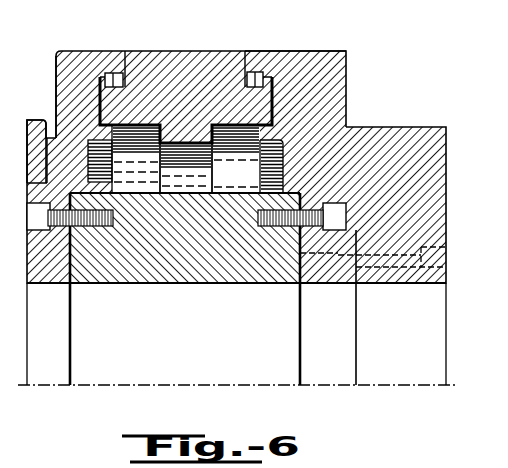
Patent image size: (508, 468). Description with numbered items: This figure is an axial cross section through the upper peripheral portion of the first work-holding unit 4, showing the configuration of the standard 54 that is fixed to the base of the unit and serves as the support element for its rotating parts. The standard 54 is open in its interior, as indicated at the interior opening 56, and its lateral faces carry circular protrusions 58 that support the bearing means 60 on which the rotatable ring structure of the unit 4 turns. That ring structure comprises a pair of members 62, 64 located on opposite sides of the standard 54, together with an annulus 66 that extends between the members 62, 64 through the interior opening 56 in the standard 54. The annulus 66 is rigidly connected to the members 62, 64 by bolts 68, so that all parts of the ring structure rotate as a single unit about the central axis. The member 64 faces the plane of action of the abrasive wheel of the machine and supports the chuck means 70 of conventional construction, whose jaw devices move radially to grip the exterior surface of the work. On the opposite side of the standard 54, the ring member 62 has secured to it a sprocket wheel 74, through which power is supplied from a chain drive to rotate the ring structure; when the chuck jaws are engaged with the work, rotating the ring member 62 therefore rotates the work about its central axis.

The first work-holding unit 4 is at (227, 47).
The standard 54 is at (164, 58).
The interior opening 56 is at (248, 183).
The circular protrusions 58 is at (97, 81).
The bearing means 60 is at (114, 51).
The ring member 62 is at (56, 90).
The ring member 64 is at (350, 111).
The annulus 66 is at (186, 283).
The bolts 68 is at (103, 222).
The chuck means 70 is at (446, 148).
The sprocket wheel 74 is at (27, 141).